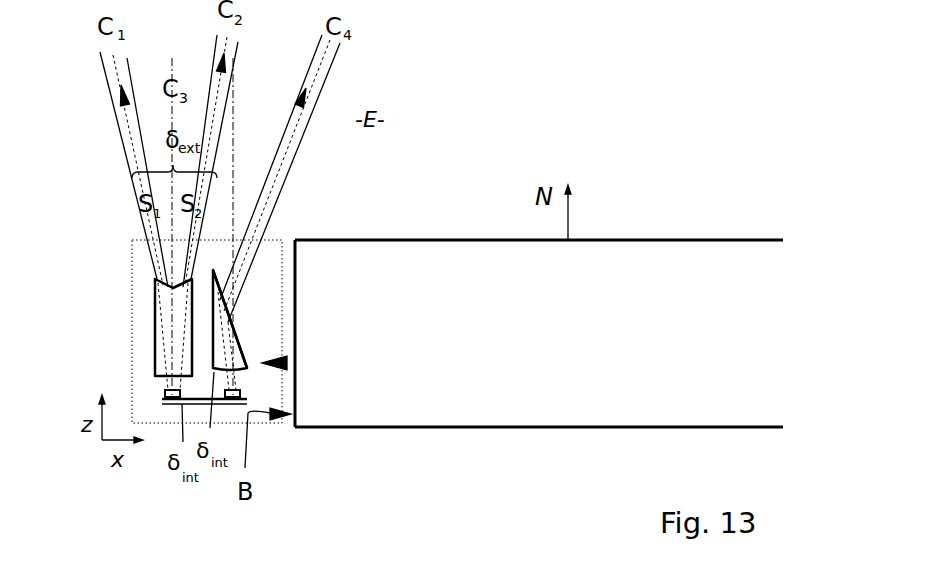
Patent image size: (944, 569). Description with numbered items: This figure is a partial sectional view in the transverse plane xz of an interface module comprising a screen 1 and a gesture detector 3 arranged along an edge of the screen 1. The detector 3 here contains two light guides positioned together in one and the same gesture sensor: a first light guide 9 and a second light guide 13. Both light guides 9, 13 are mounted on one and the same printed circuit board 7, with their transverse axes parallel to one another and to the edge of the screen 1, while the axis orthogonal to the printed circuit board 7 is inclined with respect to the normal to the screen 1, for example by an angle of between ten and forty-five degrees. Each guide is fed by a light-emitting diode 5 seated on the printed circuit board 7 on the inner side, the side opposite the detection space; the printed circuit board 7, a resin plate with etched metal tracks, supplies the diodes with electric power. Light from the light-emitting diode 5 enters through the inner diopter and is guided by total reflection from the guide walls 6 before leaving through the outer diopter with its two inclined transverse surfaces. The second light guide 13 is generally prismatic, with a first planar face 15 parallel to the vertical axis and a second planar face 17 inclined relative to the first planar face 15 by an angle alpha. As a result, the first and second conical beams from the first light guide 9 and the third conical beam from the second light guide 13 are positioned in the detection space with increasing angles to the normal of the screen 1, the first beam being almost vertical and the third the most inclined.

The screen 1 is at (539, 333).
The detector 3 is at (150, 255).
The light-emitting diode 5 is at (174, 405).
The guide walls 6 is at (157, 279).
The printed circuit board 7 is at (165, 393).
The first light guide 9 is at (115, 308).
The second light guide 13 is at (287, 363).
The first planar face 15 is at (213, 337).
The second planar face 17 is at (223, 290).